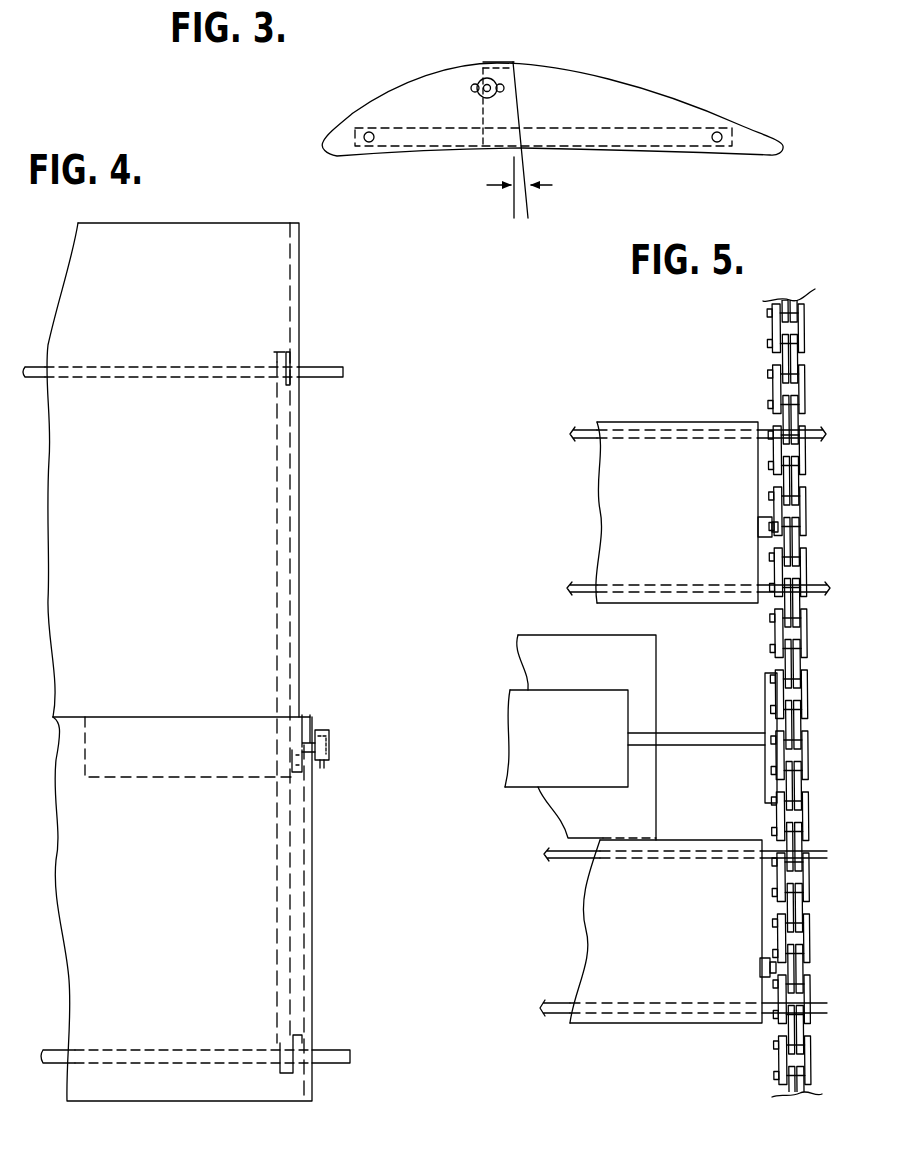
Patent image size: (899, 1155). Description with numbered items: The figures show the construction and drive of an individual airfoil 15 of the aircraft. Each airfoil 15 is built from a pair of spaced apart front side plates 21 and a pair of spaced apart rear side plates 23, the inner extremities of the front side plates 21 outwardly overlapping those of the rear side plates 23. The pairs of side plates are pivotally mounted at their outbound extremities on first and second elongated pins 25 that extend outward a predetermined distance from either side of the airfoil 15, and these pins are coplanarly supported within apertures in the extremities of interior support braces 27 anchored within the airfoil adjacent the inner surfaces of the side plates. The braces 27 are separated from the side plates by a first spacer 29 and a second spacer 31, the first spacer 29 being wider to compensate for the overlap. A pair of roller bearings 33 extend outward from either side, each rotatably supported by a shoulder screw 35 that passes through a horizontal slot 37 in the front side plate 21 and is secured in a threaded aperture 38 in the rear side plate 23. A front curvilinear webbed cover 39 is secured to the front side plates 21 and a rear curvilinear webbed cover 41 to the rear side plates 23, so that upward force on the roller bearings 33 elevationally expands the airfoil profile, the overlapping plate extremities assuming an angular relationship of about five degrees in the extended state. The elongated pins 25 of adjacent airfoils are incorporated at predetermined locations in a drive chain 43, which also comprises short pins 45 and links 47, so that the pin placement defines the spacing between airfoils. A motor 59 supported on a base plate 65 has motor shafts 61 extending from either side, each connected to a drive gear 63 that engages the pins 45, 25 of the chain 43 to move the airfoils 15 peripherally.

In FIG. 3, the airfoil 15 is at (556, 67).
In FIG. 4, the airfoil 15 is at (302, 287).
In FIG. 5, the airfoil 15 is at (631, 518).
In FIG. 3, the front side plate 21 is at (414, 113).
In FIG. 4, the front side plate 21 is at (314, 896).
In FIG. 3, the rear side plate 23 is at (531, 113).
In FIG. 4, the rear side plate 23 is at (300, 492).
In FIG. 3, the elongated pin 25 is at (369, 131).
In FIG. 4, the elongated pin 25 is at (343, 367).
In FIG. 5, the elongated pin 25 is at (822, 438).
In FIG. 3, the interior support brace 27 is at (580, 141).
In FIG. 4, the interior support brace 27 is at (276, 459).
In FIG. 4, the first spacer 29 is at (300, 1050).
In FIG. 4, the second spacer 31 is at (290, 357).
In FIG. 3, the roller bearing 33 is at (492, 86).
In FIG. 4, the roller bearing 33 is at (329, 734).
In FIG. 5, the roller bearing 33 is at (770, 521).
In FIG. 3, the shoulder screw 35 is at (487, 78).
In FIG. 4, the shoulder screw 35 is at (328, 757).
In FIG. 3, the horizontal slot 37 is at (468, 84).
In FIG. 4, the horizontal slot 37 is at (311, 718).
In FIG. 4, the threaded aperture 38 is at (297, 738).
In FIG. 3, the front curvilinear webbed cover 39 is at (402, 80).
In FIG. 4, the front curvilinear webbed cover 39 is at (158, 879).
In FIG. 3, the rear curvilinear webbed cover 41 is at (672, 97).
In FIG. 4, the rear curvilinear webbed cover 41 is at (98, 468).
In FIG. 5, the drive chain 43 is at (807, 558).
In FIG. 5, the short pin 45 is at (796, 668).
In FIG. 5, the link 47 is at (806, 772).
In FIG. 5, the motor 59 is at (556, 761).
In FIG. 5, the motor shaft 61 is at (707, 735).
In FIG. 5, the drive gear 63 is at (765, 681).
In FIG. 5, the base plate 65 is at (527, 641).